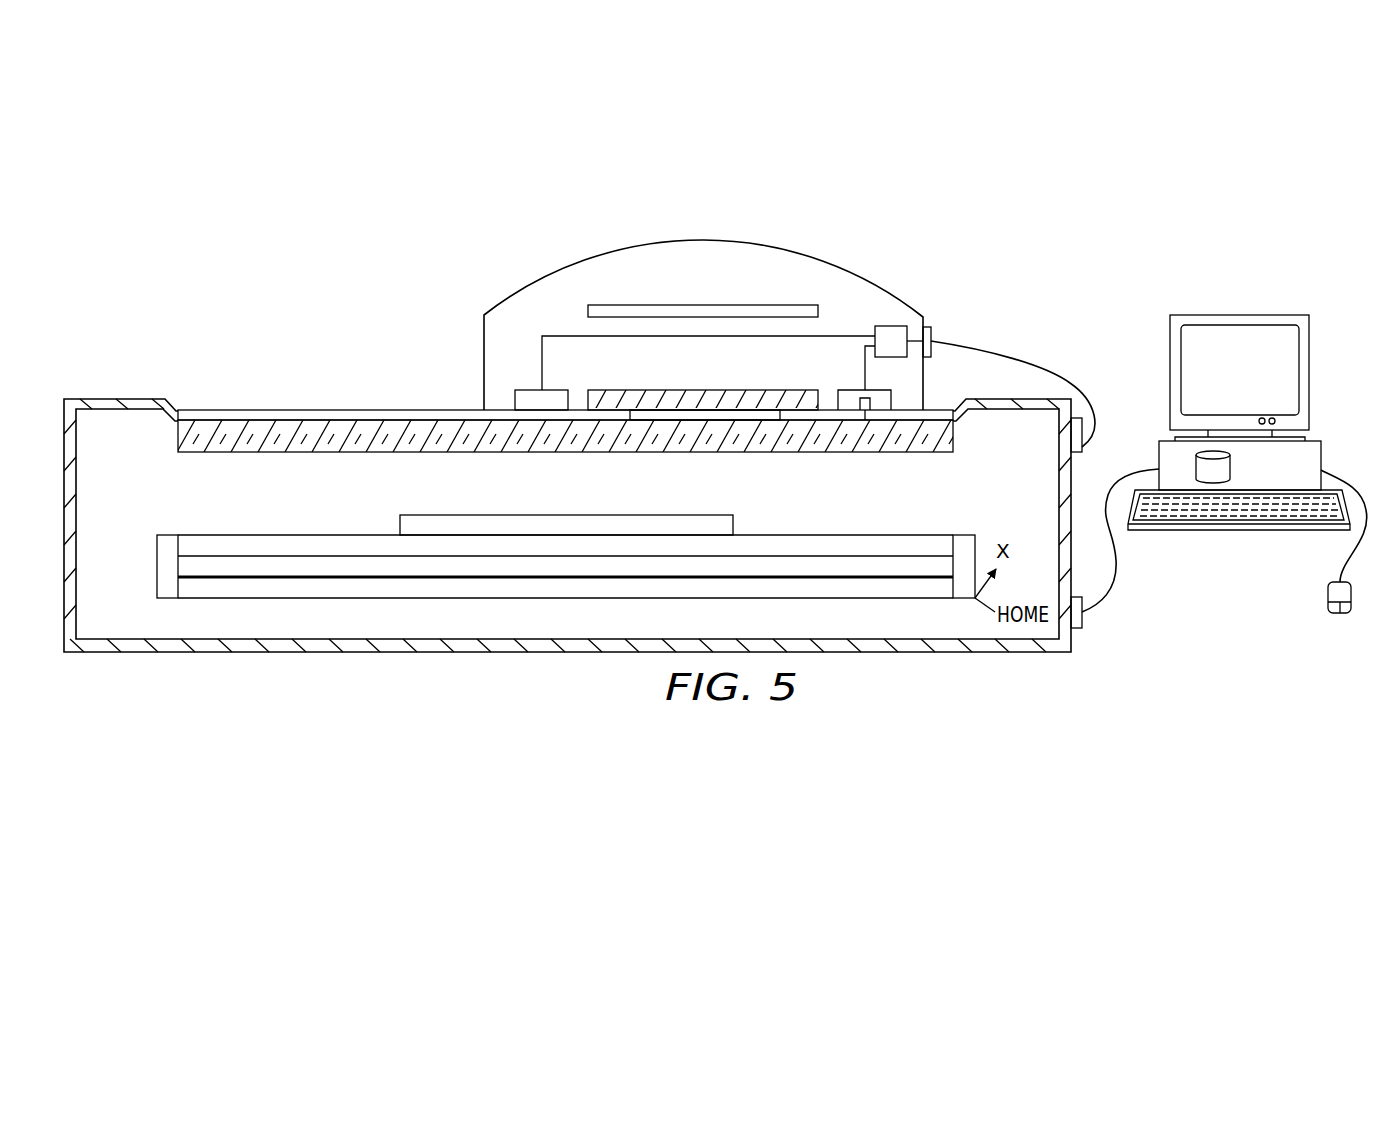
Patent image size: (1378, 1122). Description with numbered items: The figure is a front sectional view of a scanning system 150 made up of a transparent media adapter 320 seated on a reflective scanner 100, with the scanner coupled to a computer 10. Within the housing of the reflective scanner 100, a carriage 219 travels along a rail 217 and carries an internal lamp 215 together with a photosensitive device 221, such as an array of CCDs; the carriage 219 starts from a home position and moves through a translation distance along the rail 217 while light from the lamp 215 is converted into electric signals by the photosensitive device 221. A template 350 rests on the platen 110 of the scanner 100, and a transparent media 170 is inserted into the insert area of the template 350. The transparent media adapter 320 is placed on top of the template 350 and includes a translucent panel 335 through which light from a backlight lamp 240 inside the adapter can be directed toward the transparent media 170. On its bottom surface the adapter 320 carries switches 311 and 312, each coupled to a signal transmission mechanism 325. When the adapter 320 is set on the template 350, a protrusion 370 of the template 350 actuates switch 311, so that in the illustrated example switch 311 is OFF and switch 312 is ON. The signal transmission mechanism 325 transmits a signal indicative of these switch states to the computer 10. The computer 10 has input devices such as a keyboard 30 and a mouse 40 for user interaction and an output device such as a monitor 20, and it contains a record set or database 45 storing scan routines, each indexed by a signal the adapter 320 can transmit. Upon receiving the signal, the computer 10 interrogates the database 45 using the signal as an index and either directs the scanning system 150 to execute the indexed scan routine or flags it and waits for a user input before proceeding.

The computer 10 is at (1225, 471).
The monitor 20 is at (1309, 372).
The keyboard 30 is at (1238, 533).
The mouse 40 is at (1327, 602).
The database 45 is at (1230, 465).
The reflective scanner 100 is at (216, 653).
The platen 110 is at (470, 453).
The scanning system 150 is at (998, 211).
The transparent media 170 is at (660, 410).
The lamp 215 is at (270, 556).
The rail 217 is at (168, 538).
The carriage 219 is at (900, 590).
The photosensitive device 221 is at (660, 515).
The lamp 240 is at (700, 305).
The switch 311 is at (893, 400).
The switch 312 is at (524, 390).
The transparent media adapter 320 is at (590, 262).
The signal transmission mechanism 325 is at (889, 326).
The translucent panel 335 is at (708, 390).
The template 350 is at (316, 410).
The protrusion 370 is at (865, 420).